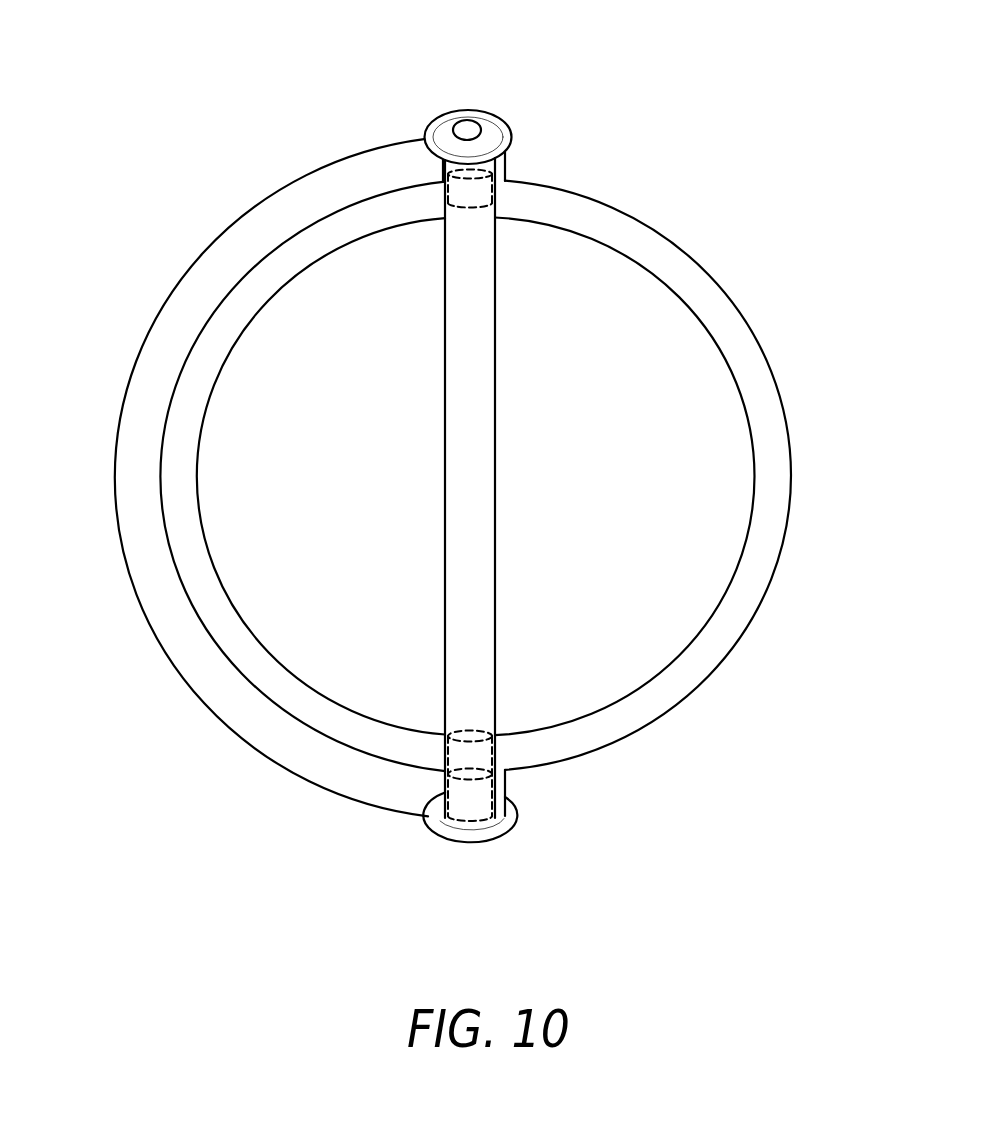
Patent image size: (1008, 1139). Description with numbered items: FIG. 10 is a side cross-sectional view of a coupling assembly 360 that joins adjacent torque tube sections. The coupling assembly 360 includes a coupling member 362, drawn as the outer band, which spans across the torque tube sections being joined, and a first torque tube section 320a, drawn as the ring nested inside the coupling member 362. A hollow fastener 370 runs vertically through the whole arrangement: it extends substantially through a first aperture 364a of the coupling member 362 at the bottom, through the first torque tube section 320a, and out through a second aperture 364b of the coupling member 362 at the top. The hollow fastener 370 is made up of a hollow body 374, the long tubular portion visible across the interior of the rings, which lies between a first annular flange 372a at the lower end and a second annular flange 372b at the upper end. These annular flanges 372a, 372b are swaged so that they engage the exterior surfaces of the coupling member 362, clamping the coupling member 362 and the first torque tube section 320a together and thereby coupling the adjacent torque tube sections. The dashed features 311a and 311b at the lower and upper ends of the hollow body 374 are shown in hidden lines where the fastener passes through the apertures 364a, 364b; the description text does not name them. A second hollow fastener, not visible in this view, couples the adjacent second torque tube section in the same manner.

The coupling assembly 360 is at (198, 112).
The coupling member 362 is at (185, 323).
The first torque tube section 320a is at (752, 352).
The hollow fastener 370 is at (535, 430).
The hollow body 374 is at (463, 487).
The second aperture 364b is at (505, 163).
The first aperture 364a is at (505, 788).
The second annular flange 372b is at (483, 120).
The first annular flange 372a is at (467, 832).
The upper hole 311b is at (497, 182).
The lower hole 311a is at (495, 753).